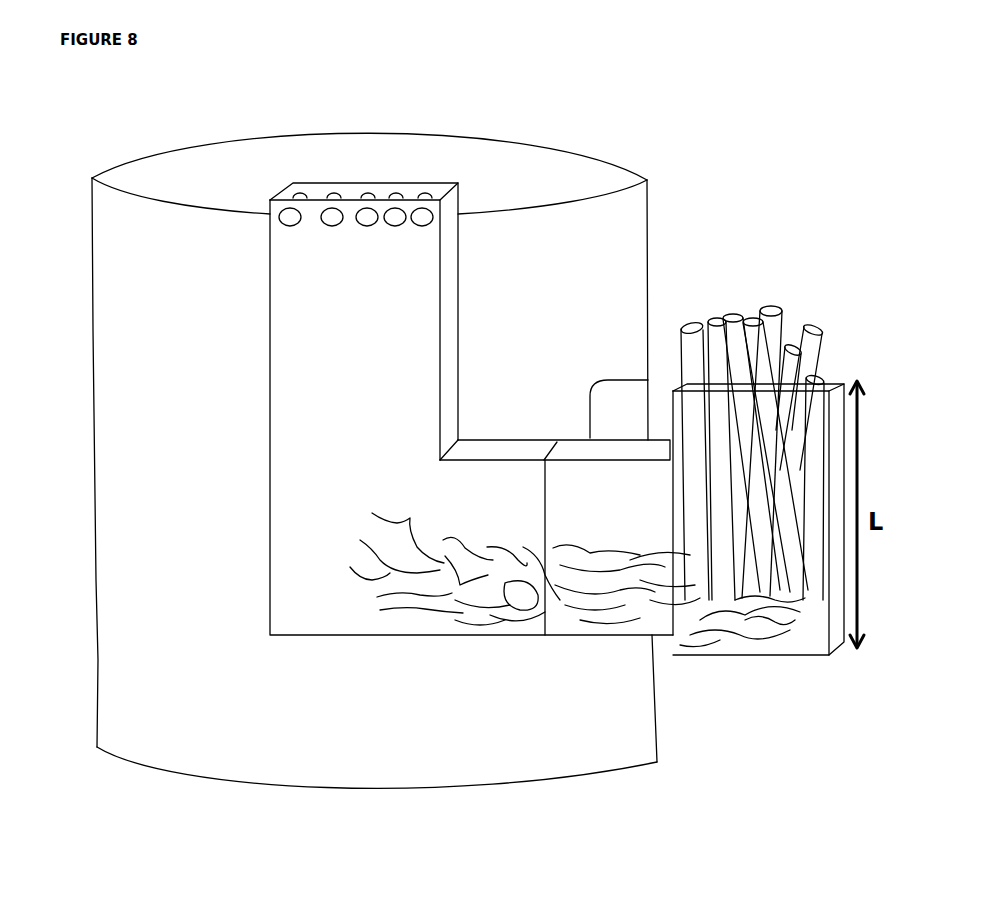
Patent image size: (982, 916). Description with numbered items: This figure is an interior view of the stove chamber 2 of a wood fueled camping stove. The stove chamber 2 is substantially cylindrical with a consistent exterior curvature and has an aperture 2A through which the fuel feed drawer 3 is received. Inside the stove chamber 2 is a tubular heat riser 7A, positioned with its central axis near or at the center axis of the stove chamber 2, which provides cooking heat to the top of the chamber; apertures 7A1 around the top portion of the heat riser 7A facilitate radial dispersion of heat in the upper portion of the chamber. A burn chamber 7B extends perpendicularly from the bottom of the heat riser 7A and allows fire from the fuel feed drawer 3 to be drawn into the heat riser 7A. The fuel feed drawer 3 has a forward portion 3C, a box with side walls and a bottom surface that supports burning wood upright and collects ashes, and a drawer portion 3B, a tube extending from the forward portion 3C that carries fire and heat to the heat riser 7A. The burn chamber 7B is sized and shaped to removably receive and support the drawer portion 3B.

The stove chamber 2 is at (210, 740).
The aperture 2A is at (623, 415).
The heat riser 7A is at (312, 337).
The apertures 7A1 is at (395, 212).
The burn chamber 7B is at (475, 513).
The fuel feed drawer 3 is at (758, 536).
The drawer portion 3B is at (630, 617).
The forward portion 3C is at (718, 672).